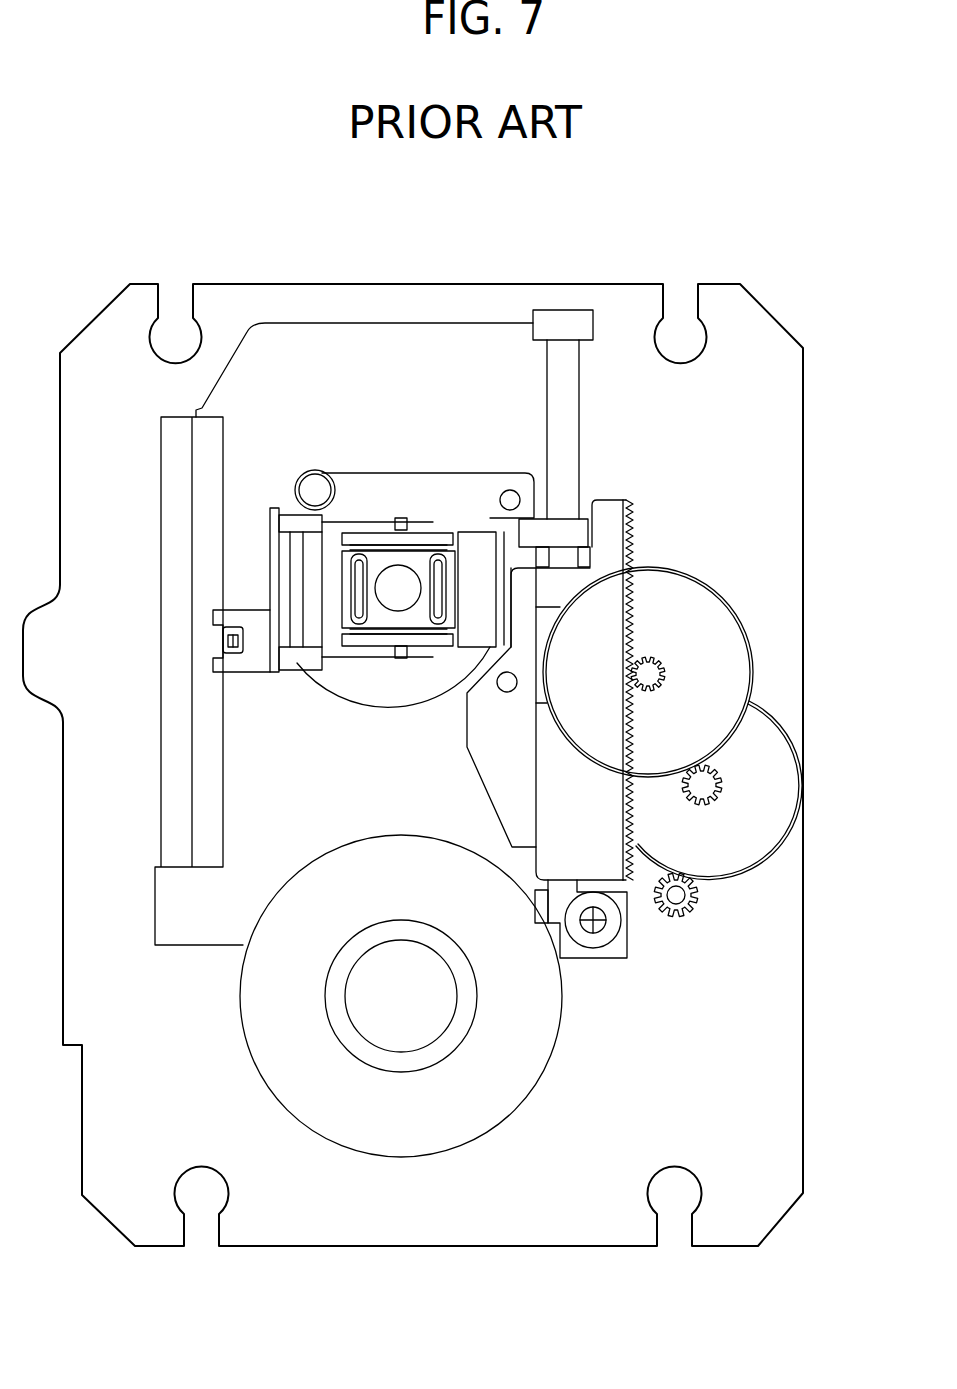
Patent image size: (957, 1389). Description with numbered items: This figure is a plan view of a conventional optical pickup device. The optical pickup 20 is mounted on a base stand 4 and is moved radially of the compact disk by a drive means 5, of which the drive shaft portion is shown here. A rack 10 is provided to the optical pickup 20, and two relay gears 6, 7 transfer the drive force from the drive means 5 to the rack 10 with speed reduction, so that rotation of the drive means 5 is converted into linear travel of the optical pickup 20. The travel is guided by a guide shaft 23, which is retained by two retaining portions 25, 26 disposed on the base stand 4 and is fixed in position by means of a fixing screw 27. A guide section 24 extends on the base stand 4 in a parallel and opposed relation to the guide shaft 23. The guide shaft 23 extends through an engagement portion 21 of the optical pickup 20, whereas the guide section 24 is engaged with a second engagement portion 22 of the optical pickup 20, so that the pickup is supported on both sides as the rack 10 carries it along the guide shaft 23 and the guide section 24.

The base stand 4 is at (785, 1095).
The drive means 5 is at (688, 908).
The relay gear 6 is at (727, 665).
The relay gear 7 is at (770, 808).
The rack 10 is at (630, 533).
The optical pickup 20 is at (447, 490).
The engagement portion 21 is at (555, 528).
The engagement portion 22 is at (257, 657).
The guide shaft 23 is at (565, 403).
The guide section 24 is at (172, 572).
The retaining portion 25 is at (608, 952).
The retaining portion 26 is at (562, 322).
The fixing screw 27 is at (605, 927).